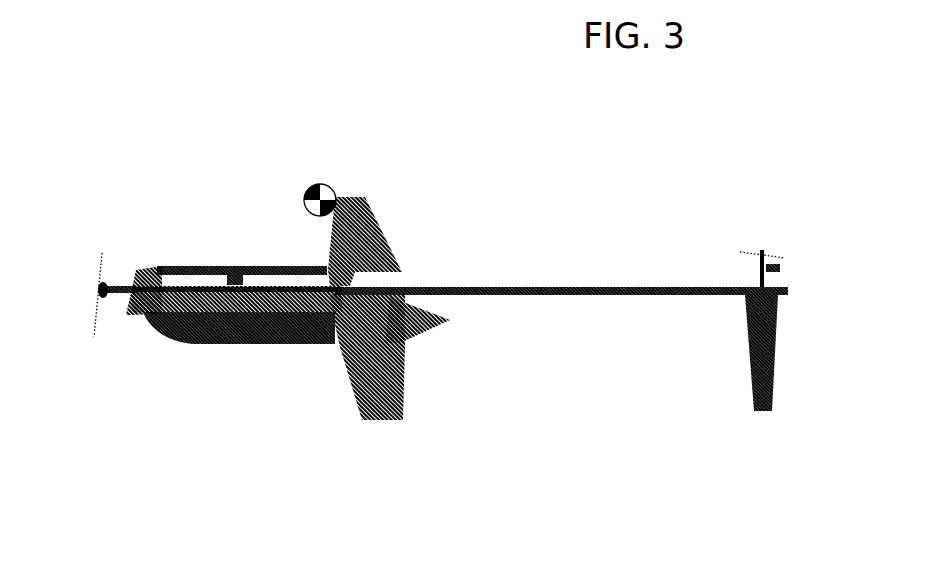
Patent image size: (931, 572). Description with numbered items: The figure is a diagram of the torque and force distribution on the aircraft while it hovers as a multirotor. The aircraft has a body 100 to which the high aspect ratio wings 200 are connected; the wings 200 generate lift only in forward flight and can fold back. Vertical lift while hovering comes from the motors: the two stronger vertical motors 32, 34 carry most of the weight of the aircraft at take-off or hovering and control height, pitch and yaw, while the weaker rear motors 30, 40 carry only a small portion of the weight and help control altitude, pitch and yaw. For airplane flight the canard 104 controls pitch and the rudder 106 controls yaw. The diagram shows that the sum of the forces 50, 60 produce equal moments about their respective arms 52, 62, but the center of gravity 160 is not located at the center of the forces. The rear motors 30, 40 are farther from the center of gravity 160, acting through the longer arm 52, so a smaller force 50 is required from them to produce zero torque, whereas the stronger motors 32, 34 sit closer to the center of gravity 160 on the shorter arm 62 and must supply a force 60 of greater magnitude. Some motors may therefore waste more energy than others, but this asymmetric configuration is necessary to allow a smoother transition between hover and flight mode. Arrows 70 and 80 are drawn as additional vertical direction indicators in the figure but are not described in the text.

The rear vertical motor 30 is at (775, 252).
The stronger vertical motor 32 is at (232, 263).
The stronger vertical motor 34 is at (222, 346).
The rear vertical motor 40 is at (790, 270).
The force 50 is at (758, 199).
The arm 52 is at (337, 199).
The force 60 is at (237, 200).
The arm 62 is at (290, 200).
The nose lift direction 70 is at (148, 266).
The wing lift direction 80 is at (355, 200).
The body 100 is at (323, 200).
The canard 104 is at (130, 272).
The rudder 106 is at (776, 370).
The center of gravity 160 is at (312, 178).
The wings 200 is at (407, 390).